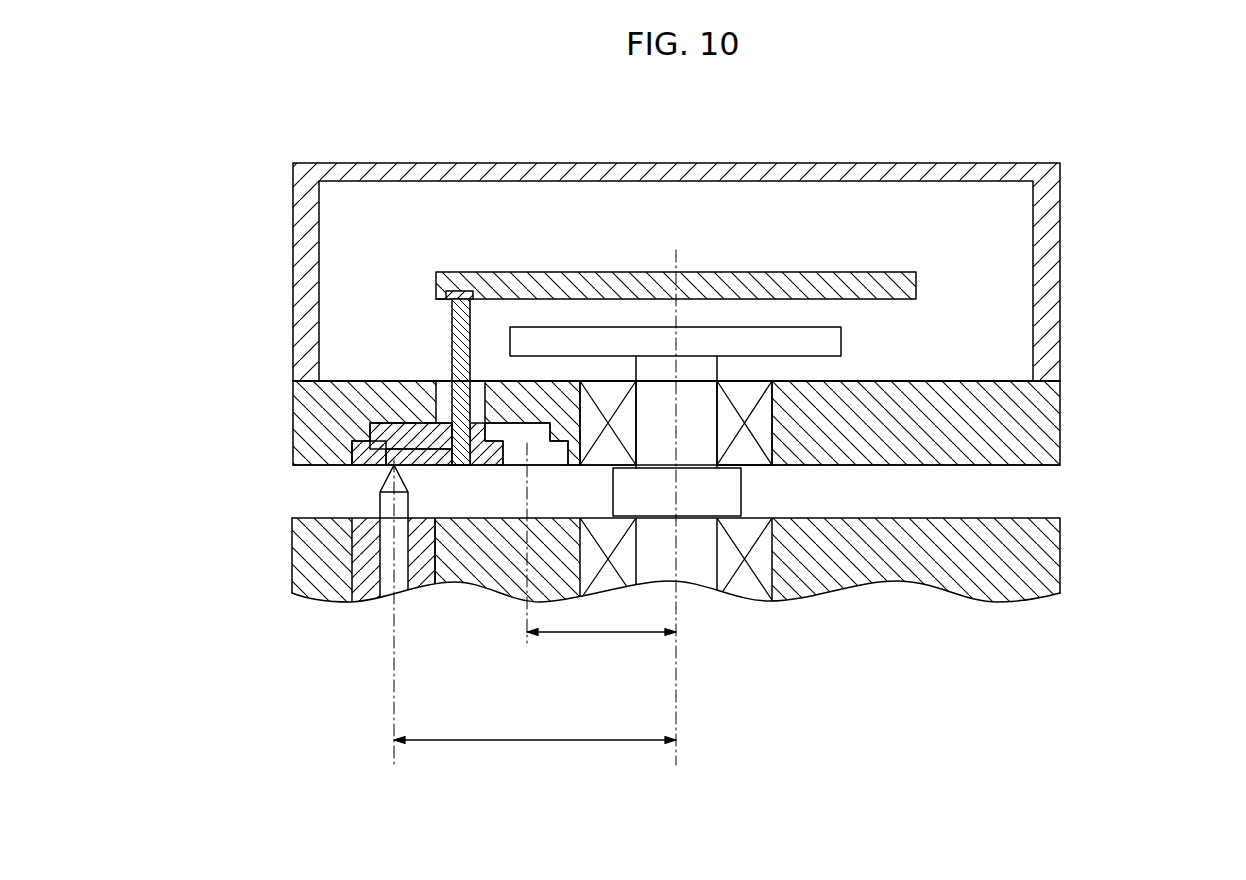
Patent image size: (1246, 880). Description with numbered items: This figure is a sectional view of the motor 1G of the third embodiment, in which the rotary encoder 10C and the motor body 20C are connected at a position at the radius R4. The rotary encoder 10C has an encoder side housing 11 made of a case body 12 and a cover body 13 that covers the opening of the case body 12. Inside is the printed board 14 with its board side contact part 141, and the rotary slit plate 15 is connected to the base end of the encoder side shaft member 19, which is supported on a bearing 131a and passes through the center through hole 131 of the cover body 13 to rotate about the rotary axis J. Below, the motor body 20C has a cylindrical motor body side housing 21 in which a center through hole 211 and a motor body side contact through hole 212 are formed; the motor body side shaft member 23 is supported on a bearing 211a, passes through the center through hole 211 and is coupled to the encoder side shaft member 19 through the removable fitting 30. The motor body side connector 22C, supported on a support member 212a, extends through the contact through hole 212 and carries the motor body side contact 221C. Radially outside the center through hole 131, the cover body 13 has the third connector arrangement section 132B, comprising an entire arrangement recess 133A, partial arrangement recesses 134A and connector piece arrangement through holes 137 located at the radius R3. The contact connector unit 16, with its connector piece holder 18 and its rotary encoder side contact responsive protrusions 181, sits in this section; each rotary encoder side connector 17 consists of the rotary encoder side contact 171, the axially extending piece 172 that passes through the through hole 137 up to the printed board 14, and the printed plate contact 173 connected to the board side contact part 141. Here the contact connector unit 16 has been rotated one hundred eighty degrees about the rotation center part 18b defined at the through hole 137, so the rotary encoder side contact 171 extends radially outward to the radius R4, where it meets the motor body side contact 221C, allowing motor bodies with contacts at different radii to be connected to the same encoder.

The motor 1G is at (962, 140).
The rotary encoder 10C is at (1102, 212).
The encoder side housing 11 is at (1127, 373).
The case body 12 is at (1062, 380).
The cover body 13 is at (1062, 410).
The printed board 14 is at (916, 287).
The rotary slit plate 15 is at (841, 341).
The contact connector unit 16 is at (513, 445).
The rotary encoder side connector 17 is at (564, 133).
The rotary encoder side contact 171 is at (477, 443).
The axially extending piece 172 is at (478, 304).
The printed plate contact 173 is at (465, 297).
The connector piece holder 18 is at (352, 458).
The rotation center part 18b is at (468, 467).
The rotary encoder side contact responsive protrusion 181 is at (385, 430).
The encoder side shaft member 19 is at (713, 370).
The center through hole 131 is at (762, 455).
The bearing 131a is at (752, 465).
The third connector arrangement section 132B is at (222, 365).
The entire arrangement recess 133A is at (352, 443).
The partial arrangement recess 134A is at (370, 432).
The connector piece arrangement through hole 137 is at (438, 383).
The board side contact part 141 is at (450, 303).
The motor body 20C is at (1068, 552).
The motor body side housing 21 is at (1005, 590).
The center through hole 211 is at (766, 573).
The bearing 211a is at (745, 580).
The motor body side contact through hole 212 is at (357, 570).
The support member 212a is at (376, 578).
The motor body side connector 22C is at (410, 503).
The motor body side contact 221C is at (403, 454).
The motor body side shaft member 23 is at (697, 567).
The fitting 30 is at (741, 490).
The rotary axis J is at (678, 699).
The radius R3 is at (601, 551).
The radius R4 is at (535, 752).